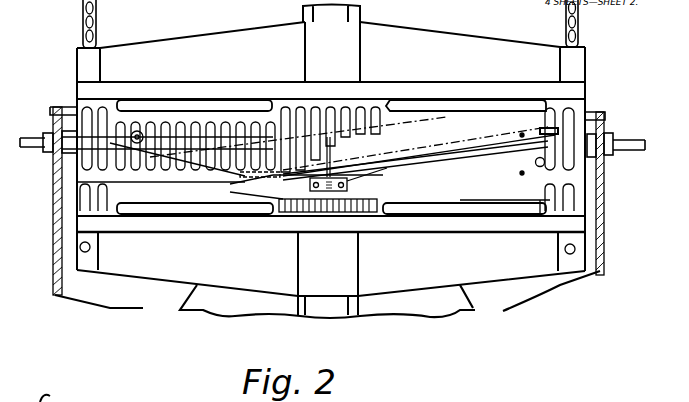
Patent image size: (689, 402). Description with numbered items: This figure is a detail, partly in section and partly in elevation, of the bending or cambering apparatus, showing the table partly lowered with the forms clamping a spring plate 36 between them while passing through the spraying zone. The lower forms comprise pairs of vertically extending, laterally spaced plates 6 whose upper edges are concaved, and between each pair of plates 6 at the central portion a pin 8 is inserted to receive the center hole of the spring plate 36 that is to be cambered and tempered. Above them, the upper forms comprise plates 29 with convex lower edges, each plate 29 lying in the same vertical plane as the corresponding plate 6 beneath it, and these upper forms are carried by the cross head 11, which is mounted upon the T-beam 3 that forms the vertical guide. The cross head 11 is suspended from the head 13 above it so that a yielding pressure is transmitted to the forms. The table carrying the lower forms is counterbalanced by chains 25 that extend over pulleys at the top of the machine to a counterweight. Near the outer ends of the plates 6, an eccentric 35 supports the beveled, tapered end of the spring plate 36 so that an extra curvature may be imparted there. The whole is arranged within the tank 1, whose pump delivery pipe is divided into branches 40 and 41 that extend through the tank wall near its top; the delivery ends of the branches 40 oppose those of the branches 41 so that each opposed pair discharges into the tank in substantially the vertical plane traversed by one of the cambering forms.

The tank 1 is at (56, 231).
The T-beam 3 is at (360, 8).
The plates 6 is at (420, 171).
The pin 8 is at (336, 163).
The cross head 11 is at (445, 116).
The head 13 is at (415, 50).
The chains 25 is at (96, 30).
The plates 29 is at (472, 132).
The eccentric 35 is at (540, 167).
The spring plate 36 is at (381, 178).
The branches 40 is at (56, 179).
The branches 41 is at (594, 133).